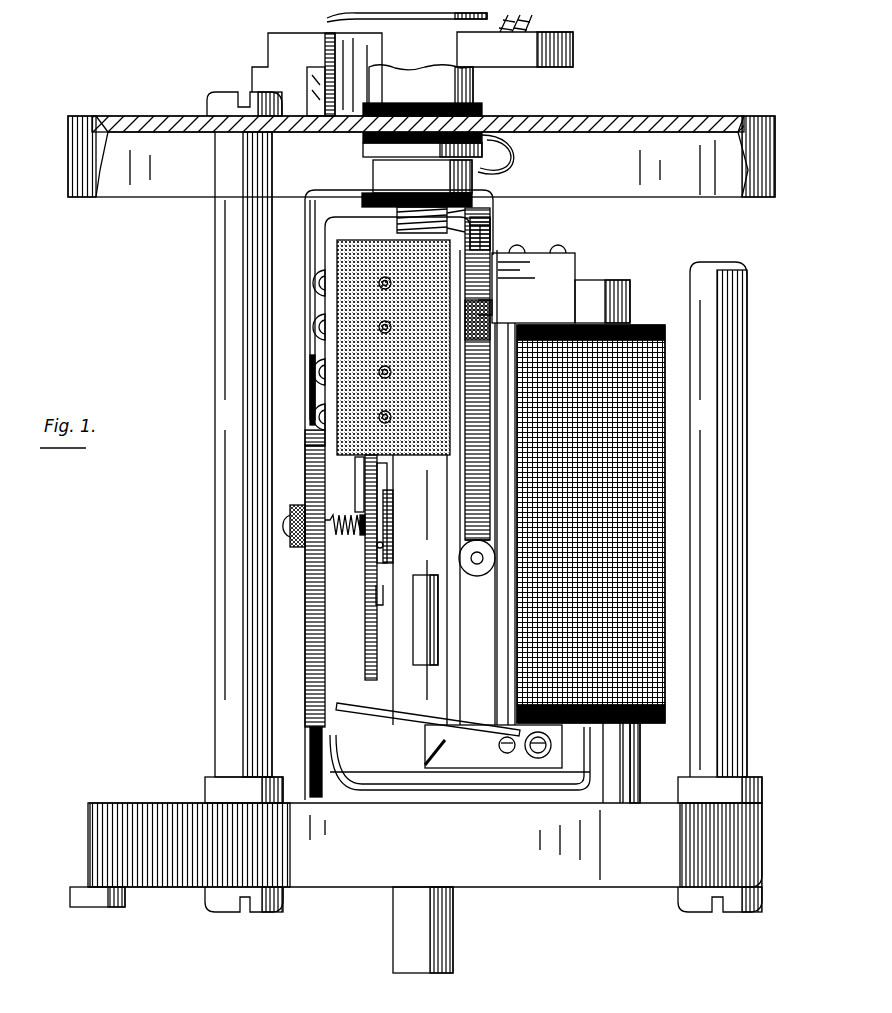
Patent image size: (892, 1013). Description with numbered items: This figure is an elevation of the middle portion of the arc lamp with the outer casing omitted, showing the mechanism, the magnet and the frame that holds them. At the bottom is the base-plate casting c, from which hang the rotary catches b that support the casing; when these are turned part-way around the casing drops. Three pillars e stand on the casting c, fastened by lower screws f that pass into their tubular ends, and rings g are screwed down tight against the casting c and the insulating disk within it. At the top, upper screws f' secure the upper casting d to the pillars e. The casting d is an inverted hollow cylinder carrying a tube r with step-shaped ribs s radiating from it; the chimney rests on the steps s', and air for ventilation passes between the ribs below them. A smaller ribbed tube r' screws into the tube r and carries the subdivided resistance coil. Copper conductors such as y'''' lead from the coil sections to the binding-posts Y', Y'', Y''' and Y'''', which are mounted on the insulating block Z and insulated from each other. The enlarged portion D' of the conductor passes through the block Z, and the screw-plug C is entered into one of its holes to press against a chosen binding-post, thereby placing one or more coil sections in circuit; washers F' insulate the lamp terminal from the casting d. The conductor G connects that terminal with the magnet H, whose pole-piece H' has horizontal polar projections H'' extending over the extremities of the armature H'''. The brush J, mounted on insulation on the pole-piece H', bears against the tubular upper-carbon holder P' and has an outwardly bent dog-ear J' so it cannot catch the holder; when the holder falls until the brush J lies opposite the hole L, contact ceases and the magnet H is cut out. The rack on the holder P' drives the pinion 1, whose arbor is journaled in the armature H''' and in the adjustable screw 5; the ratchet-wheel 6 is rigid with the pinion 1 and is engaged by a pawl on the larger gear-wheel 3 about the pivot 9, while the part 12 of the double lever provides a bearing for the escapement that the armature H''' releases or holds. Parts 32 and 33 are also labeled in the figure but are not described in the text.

The upper casting d is at (421, 156).
The pillars e is at (481, 454).
The base-plate casting c is at (425, 845).
The rings g is at (206, 782).
The lower screws f is at (483, 915).
The rotary catches b is at (112, 910).
The upper screws f' is at (243, 89).
The ribs s is at (422, 74).
The step s' is at (417, 74).
The tube r is at (454, 65).
The smaller tube r' is at (393, 20).
The copper conductor y'''' is at (421, 90).
The washers F' is at (417, 147).
The enlarged portion of conductor D' is at (447, 495).
The conductor G is at (431, 221).
The uppermost binding-post Y' is at (301, 283).
The binding-post Y'' is at (299, 327).
The binding-post Y''' is at (296, 390).
The binding-post Y'''' is at (295, 417).
The block of insulating material Z is at (308, 445).
The armature H''' is at (401, 523).
The screw-plug C is at (477, 374).
The stop 33 is at (485, 292).
The horizontal polar projections H'' is at (561, 485).
The magnet H is at (599, 564).
The roller 32 is at (475, 578).
The adjustable screw 5 is at (350, 518).
The part of double lever 12 is at (356, 470).
The gear-wheel 3 is at (365, 645).
The pinion 1 is at (393, 515).
The ratchet-wheel 6 is at (372, 548).
The pivot 9 is at (380, 604).
The hole L is at (425, 575).
The upper-carbon holder P' is at (420, 590).
The dog-ear J' is at (493, 746).
The brush J is at (512, 747).
The pole-piece H' is at (644, 763).